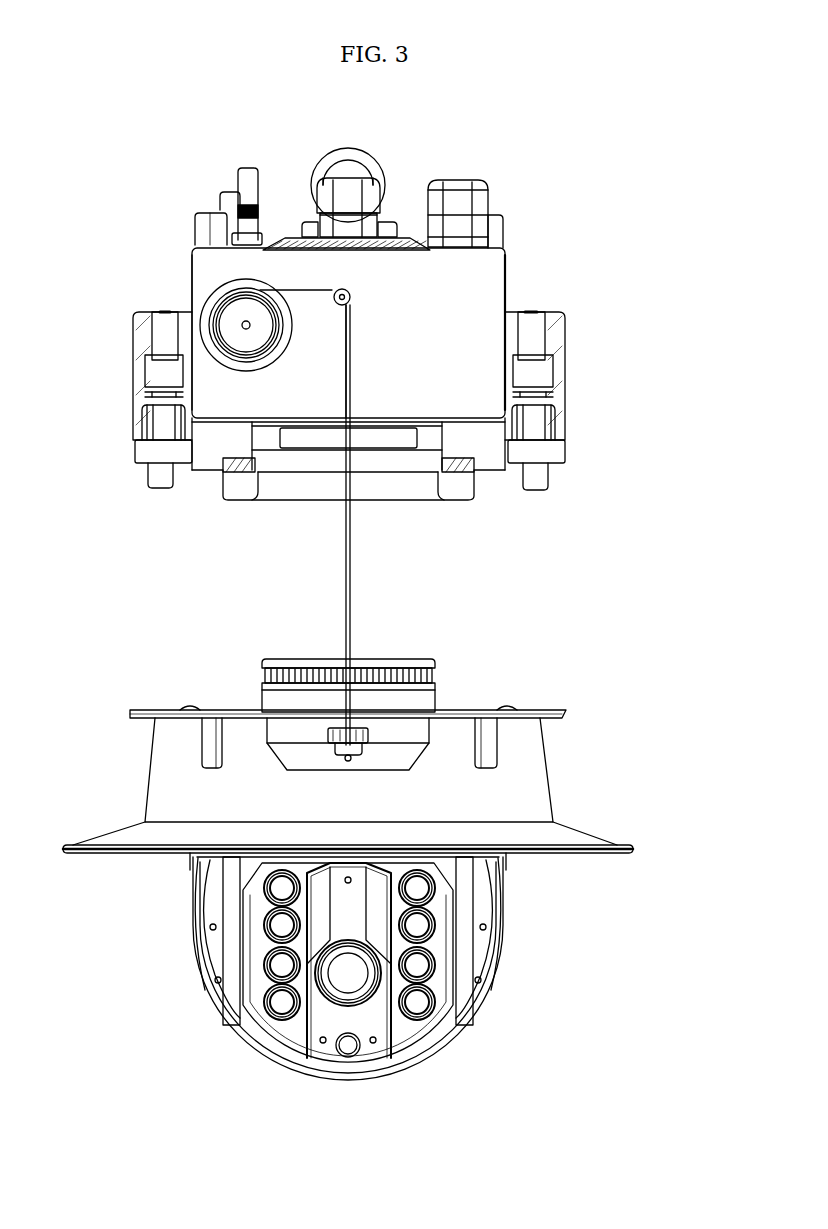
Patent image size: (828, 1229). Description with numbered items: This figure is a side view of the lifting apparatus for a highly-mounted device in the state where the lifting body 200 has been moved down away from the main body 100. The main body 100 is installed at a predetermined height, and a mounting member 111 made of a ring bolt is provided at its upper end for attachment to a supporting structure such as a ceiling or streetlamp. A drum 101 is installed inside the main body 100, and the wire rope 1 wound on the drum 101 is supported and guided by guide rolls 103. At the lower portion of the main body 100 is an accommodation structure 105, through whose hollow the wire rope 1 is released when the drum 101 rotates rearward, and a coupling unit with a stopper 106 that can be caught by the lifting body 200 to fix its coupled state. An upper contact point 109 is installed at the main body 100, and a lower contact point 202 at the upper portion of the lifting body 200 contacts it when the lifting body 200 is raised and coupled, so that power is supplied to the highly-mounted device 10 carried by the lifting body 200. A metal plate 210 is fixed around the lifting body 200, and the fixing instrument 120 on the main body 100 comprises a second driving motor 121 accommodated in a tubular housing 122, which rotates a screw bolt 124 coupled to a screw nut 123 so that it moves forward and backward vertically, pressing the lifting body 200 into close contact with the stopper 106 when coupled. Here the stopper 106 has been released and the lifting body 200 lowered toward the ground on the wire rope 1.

The highly-mounted device 10 is at (625, 884).
The wire rope 1 is at (352, 545).
The main body 100 is at (530, 263).
The drum 101 is at (274, 357).
The guide roll 103 is at (351, 297).
The accommodation structure 105 is at (222, 442).
The stopper 106 is at (247, 462).
The upper contact point 109 is at (383, 455).
The mounting member 111 is at (347, 148).
The fixing instrument 120 is at (115, 355).
The second driving motor 121 is at (535, 349).
The tubular housing 122 is at (560, 368).
The screw nut 123 is at (545, 452).
The screw bolt 124 is at (541, 476).
The lifting body 200 is at (432, 697).
The lower contact point 202 is at (388, 657).
The metal plate 210 is at (567, 714).